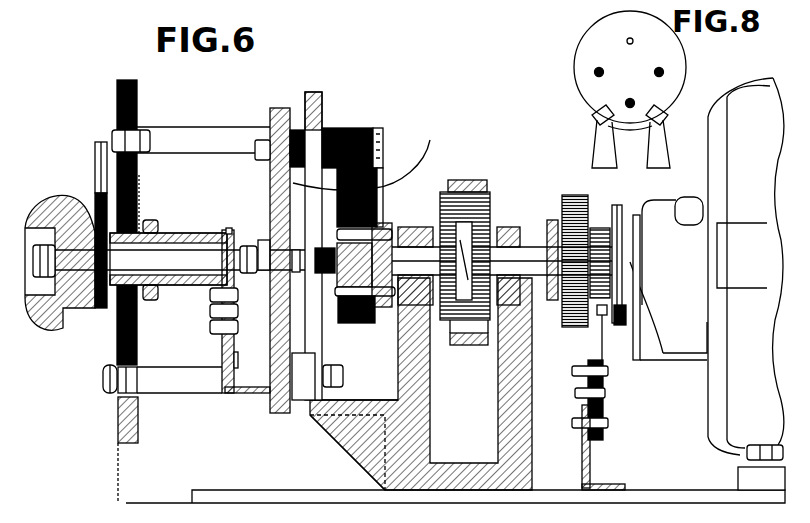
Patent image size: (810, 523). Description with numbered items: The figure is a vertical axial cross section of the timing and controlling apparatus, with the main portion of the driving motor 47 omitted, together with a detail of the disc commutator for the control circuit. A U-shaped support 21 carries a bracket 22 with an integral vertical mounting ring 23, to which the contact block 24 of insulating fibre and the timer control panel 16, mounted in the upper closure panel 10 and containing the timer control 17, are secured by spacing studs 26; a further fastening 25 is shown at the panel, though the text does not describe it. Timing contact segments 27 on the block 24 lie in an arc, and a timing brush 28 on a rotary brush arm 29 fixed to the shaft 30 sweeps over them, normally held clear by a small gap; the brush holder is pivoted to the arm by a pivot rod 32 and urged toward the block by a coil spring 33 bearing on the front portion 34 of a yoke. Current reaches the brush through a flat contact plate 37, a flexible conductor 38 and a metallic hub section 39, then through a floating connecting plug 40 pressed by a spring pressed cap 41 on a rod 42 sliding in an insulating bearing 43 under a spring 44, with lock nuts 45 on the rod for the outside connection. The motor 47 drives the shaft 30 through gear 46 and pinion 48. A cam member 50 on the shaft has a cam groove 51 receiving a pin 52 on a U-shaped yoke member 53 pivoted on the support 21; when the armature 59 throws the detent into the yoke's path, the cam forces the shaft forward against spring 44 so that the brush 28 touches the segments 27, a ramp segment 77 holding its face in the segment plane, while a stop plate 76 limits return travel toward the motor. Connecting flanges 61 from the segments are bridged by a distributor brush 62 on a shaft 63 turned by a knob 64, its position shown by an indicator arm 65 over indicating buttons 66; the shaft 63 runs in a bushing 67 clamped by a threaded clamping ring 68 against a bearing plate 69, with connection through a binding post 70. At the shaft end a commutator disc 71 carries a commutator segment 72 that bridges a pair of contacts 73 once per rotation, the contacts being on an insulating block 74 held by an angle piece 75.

In FIG. 6, the upper closure panel 10 is at (117, 80).
In FIG. 6, the timer control panel 16 is at (115, 103).
In FIG. 6, the timer control 17 is at (64, 325).
In FIG. 6, the U-shaped support 21 is at (498, 400).
In FIG. 6, the bracket 22 is at (345, 440).
In FIG. 6, the mounting ring 23 is at (323, 106).
In FIG. 6, the contact block 24 is at (275, 113).
In FIG. 6, the screw 25 is at (118, 420).
In FIG. 6, the spacing studs 26 is at (168, 130).
In FIG. 6, the timing contact segments 27 is at (307, 386).
In FIG. 6, the timing brush 28 is at (348, 132).
In FIG. 6, the rotary brush arm 29 is at (380, 180).
In FIG. 6, the shaft 30 is at (535, 250).
In FIG. 6, the pivot rod 32 is at (370, 308).
In FIG. 6, the expansion coil spring 33 is at (373, 154).
In FIG. 6, the front portion of yoke 34 is at (262, 165).
In FIG. 6, the flat contact plate 37 is at (384, 142).
In FIG. 6, the flexible conductor 38 is at (380, 177).
In FIG. 6, the metallic hub section 39 is at (376, 224).
In FIG. 6, the floating connecting plug 40 is at (332, 280).
In FIG. 6, the spring pressed cap 41 is at (270, 181).
In FIG. 6, the rod 42 is at (247, 247).
In FIG. 6, the insulating bearing 43 is at (262, 238).
In FIG. 6, the spring 44 is at (246, 311).
In FIG. 6, the lock nuts 45 is at (232, 236).
In FIG. 6, the gear 46 is at (585, 208).
In FIG. 6, the motor 47 is at (718, 117).
In FIG. 6, the pinion 48 is at (553, 300).
In FIG. 6, the cam member 50 is at (488, 226).
In FIG. 6, the cam groove 51 is at (465, 322).
In FIG. 6, the pin 52 is at (435, 228).
In FIG. 6, the U-shaped yoke member 53 is at (473, 186).
In FIG. 6, the armature 59 is at (670, 291).
In FIG. 6, the connecting flanges 61 is at (222, 358).
In FIG. 6, the distributor brush 62 is at (210, 310).
In FIG. 6, the shaft 63 is at (209, 283).
In FIG. 6, the knob 64 is at (52, 200).
In FIG. 6, the indicator arm 65 is at (95, 157).
In FIG. 6, the indicating buttons 66 is at (112, 138).
In FIG. 6, the bushing 67 is at (185, 249).
In FIG. 6, the threaded clamping ring 68 is at (158, 250).
In FIG. 6, the bearing plate 69 is at (140, 200).
In FIG. 6, the binding post 70 is at (213, 328).
In FIG. 6, the commutator disc 71 is at (613, 240).
In FIG. 8, the commutator disc 71 is at (583, 61).
In FIG. 6, the commutator segment 72 is at (639, 312).
In FIG. 8, the commutator segment 72 is at (668, 118).
In FIG. 6, the contacts 73 is at (601, 325).
In FIG. 8, the contacts 73 is at (662, 147).
In FIG. 6, the block 74 is at (605, 410).
In FIG. 6, the angle piece 75 is at (592, 468).
In FIG. 6, the stop plate 76 is at (504, 228).
In FIG. 6, the ramp segment 77 is at (300, 130).